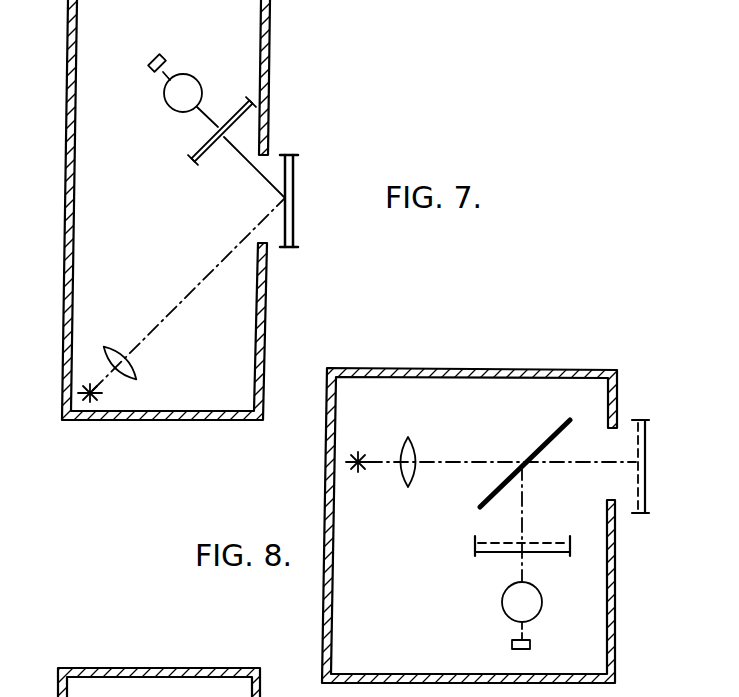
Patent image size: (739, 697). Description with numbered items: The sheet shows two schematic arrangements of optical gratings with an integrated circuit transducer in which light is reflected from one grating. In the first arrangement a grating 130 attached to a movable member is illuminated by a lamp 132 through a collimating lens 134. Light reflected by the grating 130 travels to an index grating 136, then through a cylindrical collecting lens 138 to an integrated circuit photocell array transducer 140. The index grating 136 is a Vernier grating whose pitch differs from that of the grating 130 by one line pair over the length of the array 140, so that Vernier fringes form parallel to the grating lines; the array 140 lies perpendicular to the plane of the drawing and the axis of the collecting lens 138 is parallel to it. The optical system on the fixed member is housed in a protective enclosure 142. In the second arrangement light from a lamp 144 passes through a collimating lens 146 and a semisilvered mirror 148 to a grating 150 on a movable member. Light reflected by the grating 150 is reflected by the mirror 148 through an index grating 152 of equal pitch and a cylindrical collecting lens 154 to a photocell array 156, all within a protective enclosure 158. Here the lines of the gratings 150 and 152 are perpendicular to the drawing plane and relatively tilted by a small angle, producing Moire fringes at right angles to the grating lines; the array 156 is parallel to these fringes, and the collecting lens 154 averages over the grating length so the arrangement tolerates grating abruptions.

In FIG. 7, the grating 130 is at (294, 183).
In FIG. 7, the lamp 132 is at (81, 392).
In FIG. 7, the collimating lens 134 is at (136, 368).
In FIG. 7, the index grating 136 is at (192, 144).
In FIG. 7, the cylindrical collecting lens 138 is at (222, 79).
In FIG. 7, the integrated circuit photocell array transducer 140 is at (166, 58).
In FIG. 7, the protective enclosure 142 is at (266, 313).
In FIG. 8, the lamp 144 is at (362, 452).
In FIG. 8, the collimating lens 146 is at (414, 454).
In FIG. 8, the semisilvered mirror 148 is at (537, 447).
In FIG. 8, the grating 150 is at (646, 450).
In FIG. 8, the index grating 152 is at (533, 547).
In FIG. 8, the cylindrical collecting lens 154 is at (502, 597).
In FIG. 8, the photocell array 156 is at (512, 645).
In FIG. 8, the protective enclosure 158 is at (616, 607).